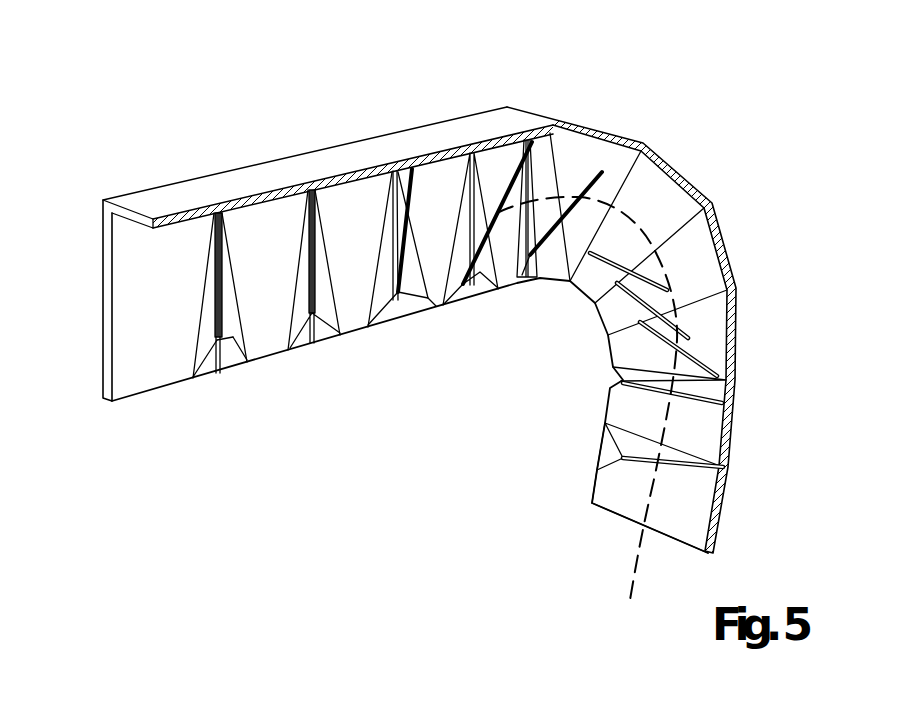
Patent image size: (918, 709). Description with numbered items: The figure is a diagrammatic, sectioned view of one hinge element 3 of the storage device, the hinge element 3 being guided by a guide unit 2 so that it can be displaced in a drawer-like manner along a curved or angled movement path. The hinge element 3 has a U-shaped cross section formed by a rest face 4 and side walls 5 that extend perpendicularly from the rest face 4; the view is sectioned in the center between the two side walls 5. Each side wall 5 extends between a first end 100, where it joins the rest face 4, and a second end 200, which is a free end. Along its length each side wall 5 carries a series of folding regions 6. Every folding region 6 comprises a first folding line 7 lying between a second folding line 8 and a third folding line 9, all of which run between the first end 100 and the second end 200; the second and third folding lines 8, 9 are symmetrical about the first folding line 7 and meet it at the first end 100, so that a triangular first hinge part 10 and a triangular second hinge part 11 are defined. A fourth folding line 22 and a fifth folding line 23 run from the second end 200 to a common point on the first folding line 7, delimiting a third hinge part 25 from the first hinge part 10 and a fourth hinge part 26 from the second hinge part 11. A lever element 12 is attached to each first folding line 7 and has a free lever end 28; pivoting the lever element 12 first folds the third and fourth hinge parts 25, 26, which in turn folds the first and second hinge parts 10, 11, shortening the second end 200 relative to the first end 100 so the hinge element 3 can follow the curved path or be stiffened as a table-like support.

The guide unit 2 is at (635, 558).
The hinge element 3 is at (330, 114).
The rest face 4 is at (481, 123).
The side wall 5 is at (263, 310).
The folding region 6 is at (194, 273).
The first folding line 7 is at (376, 188).
The second folding line 8 is at (234, 292).
The third folding line 9 is at (200, 313).
The first hinge part 10 is at (233, 338).
The second hinge part 11 is at (200, 340).
The lever element 12 is at (407, 317).
The fourth folding line 22 is at (432, 306).
The fifth folding line 23 is at (373, 305).
The third hinge part 25 is at (227, 362).
The fourth hinge part 26 is at (207, 363).
The free lever end 28 is at (535, 146).
The first end 100 is at (713, 502).
The second end 200 is at (593, 490).